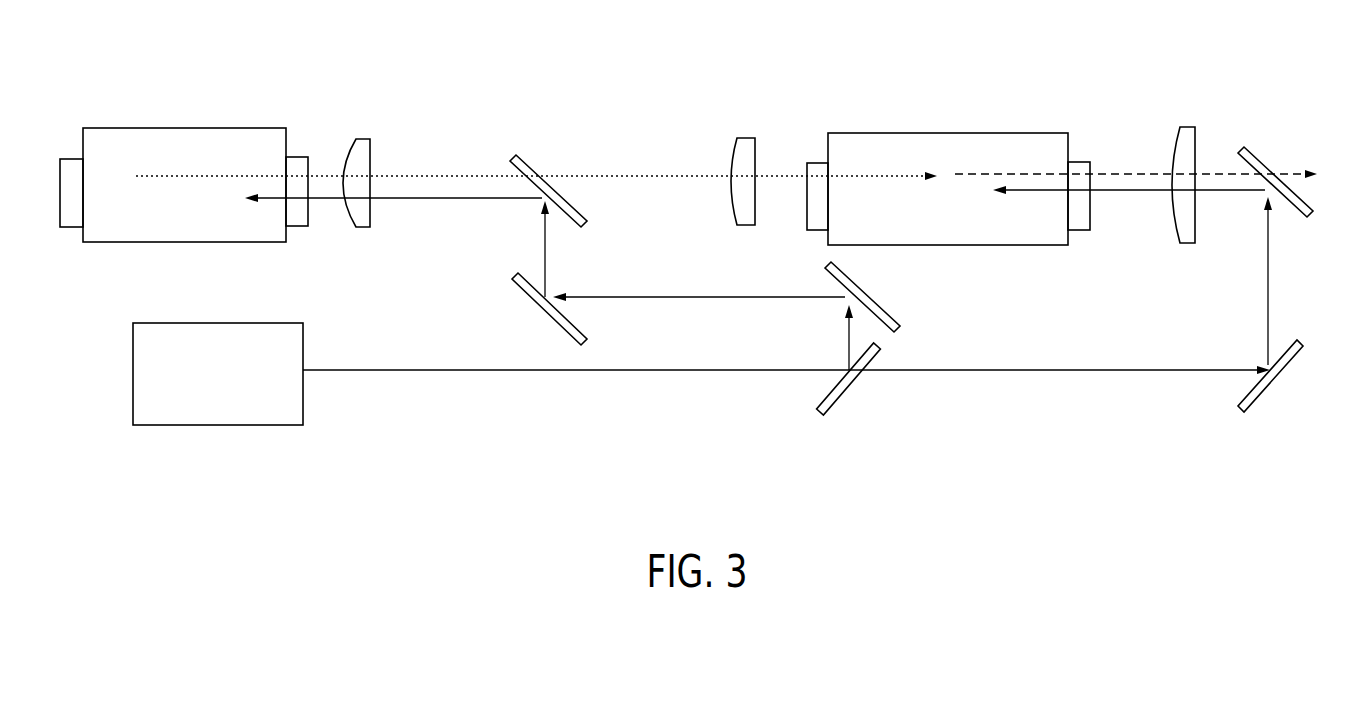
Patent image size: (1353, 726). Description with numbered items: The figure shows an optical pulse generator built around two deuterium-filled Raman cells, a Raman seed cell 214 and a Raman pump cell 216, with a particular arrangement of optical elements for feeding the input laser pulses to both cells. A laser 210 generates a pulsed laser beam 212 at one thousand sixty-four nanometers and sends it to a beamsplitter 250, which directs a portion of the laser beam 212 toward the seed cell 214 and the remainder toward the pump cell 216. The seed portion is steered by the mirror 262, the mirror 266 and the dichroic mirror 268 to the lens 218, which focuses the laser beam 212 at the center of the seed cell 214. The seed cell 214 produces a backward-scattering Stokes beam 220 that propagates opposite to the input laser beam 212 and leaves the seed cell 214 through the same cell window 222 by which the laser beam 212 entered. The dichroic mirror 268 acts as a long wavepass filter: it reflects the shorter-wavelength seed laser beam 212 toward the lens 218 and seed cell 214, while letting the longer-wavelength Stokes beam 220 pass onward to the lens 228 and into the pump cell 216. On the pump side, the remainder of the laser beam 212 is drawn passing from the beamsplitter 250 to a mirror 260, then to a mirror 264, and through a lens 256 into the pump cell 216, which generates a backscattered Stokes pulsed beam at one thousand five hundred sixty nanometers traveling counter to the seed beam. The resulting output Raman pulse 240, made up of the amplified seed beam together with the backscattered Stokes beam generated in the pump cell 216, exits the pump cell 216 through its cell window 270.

The laser 210 is at (215, 425).
The laser beam 212 is at (507, 373).
The Raman seed cell 214 is at (214, 228).
The Raman pump cell 216 is at (952, 147).
The lens 218 is at (362, 139).
The Stokes beam 220 is at (327, 177).
The cell window 222 is at (295, 213).
The lens 228 is at (750, 138).
The output Raman pulse 240 is at (1292, 168).
The beamsplitter 250 is at (832, 393).
The lens 256 is at (1183, 128).
The mirror 260 is at (1255, 407).
The mirror 262 is at (882, 305).
The dichroic mirror 264 is at (1292, 215).
The mirror 266 is at (525, 293).
The dichroic mirror 268 is at (523, 158).
The cell window 270 is at (1080, 220).